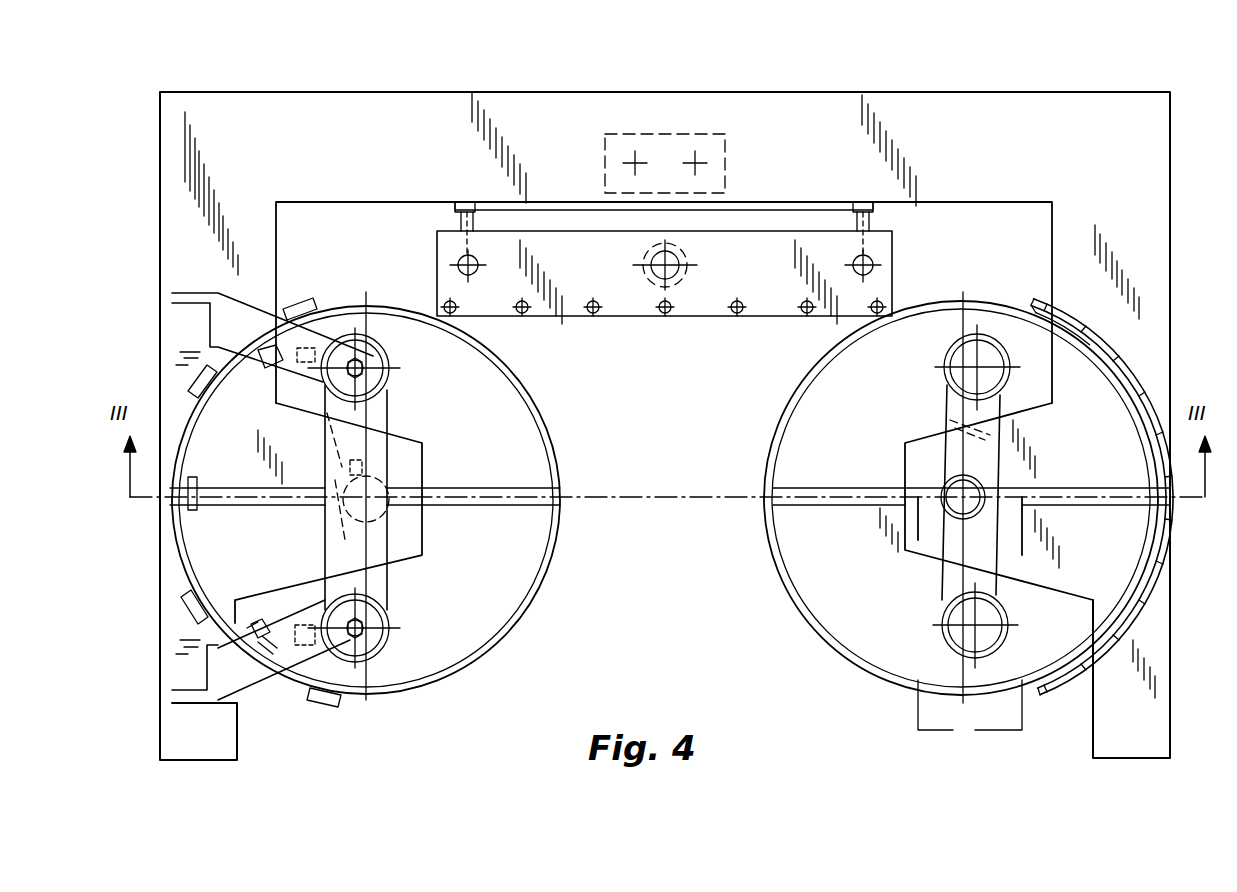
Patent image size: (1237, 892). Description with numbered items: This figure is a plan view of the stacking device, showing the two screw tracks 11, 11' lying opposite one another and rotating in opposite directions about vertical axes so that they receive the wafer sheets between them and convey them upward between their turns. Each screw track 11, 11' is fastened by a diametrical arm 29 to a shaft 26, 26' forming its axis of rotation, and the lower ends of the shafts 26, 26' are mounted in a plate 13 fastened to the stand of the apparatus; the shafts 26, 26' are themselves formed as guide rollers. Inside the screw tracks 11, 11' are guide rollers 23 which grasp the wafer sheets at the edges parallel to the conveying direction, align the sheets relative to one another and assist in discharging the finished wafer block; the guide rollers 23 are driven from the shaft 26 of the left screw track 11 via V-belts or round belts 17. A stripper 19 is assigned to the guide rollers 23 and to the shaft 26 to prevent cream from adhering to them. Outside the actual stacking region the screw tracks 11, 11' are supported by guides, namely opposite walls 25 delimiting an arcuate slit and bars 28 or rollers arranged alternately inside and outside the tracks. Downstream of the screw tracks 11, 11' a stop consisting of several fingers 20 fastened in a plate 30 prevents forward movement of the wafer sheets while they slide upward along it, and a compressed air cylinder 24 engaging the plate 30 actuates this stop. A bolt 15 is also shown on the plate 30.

The screw track 11 is at (366, 504).
The screw track 11' is at (961, 510).
The plate 13 is at (1132, 663).
The bolt 15 is at (853, 266).
The V-belts or round belts 17 is at (943, 577).
The stripper 19 is at (362, 467).
The fingers 20 is at (803, 311).
The guide rollers 23 is at (973, 628).
The compressed air cylinder 24 is at (653, 258).
The walls 25 is at (1160, 440).
The shaft 26 is at (387, 538).
The shaft 26' is at (925, 533).
The bars 28 is at (250, 633).
The diametrical arm 29 is at (810, 505).
The plate 30 is at (880, 287).